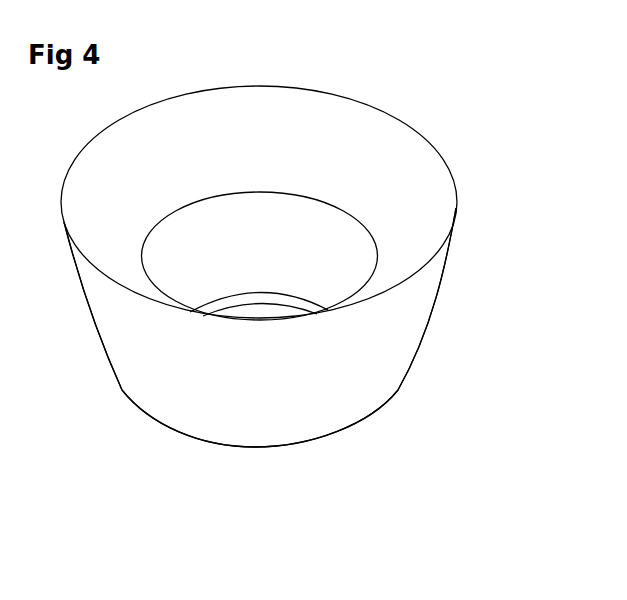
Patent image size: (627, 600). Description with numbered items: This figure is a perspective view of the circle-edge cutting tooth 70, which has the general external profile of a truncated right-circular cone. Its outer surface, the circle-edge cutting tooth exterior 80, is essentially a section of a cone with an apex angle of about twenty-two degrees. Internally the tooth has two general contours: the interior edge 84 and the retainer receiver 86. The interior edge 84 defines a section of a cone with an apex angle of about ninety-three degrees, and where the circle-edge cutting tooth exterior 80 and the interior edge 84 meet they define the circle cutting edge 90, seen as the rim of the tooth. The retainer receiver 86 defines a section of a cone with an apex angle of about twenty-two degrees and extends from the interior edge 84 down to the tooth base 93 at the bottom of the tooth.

The circle-edge cutting tooth 70 is at (517, 128).
The circle-edge cutting tooth exterior 80 is at (443, 273).
The interior edge 84 is at (427, 217).
The retainer receiver 86 is at (350, 296).
The circle cutting edge 90 is at (358, 103).
The tooth base 93 is at (275, 448).